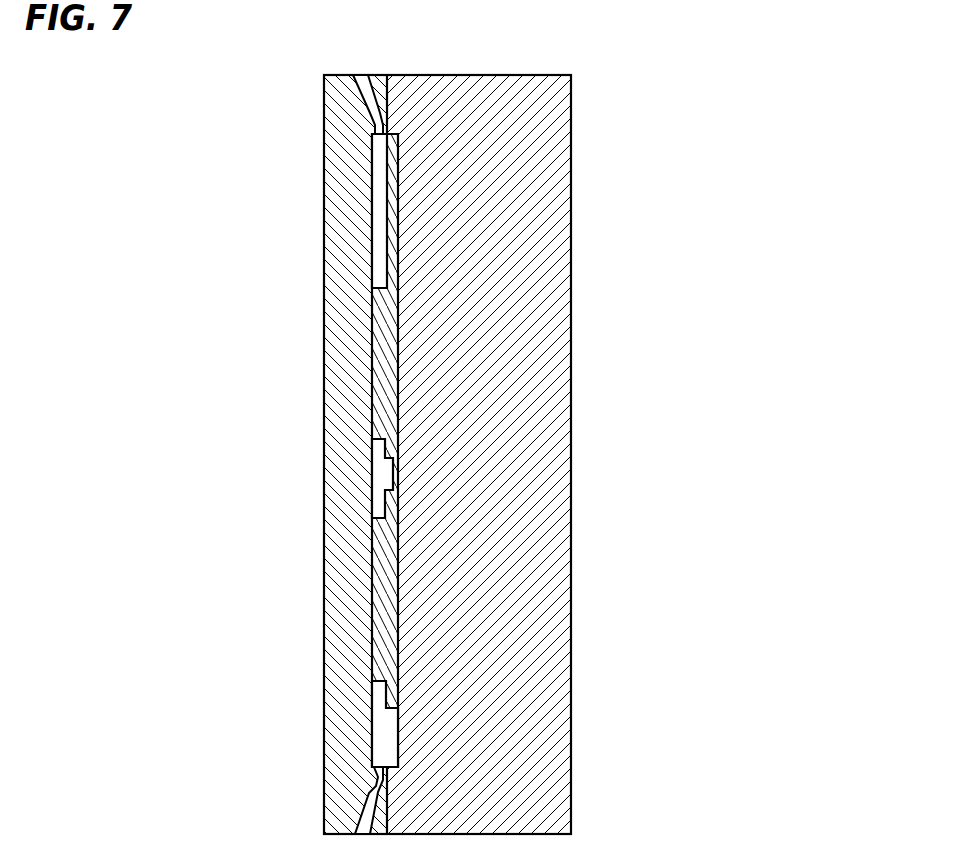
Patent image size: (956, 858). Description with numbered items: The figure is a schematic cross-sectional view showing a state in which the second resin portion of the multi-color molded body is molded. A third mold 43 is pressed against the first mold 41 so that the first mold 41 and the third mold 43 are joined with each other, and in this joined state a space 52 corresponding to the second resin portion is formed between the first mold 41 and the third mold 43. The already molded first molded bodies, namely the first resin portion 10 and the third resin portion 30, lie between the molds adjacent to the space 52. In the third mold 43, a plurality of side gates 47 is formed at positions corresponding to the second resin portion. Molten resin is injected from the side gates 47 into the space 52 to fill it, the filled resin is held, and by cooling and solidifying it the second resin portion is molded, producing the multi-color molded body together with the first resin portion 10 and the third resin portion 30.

The first resin portion 10 is at (387, 360).
The third resin portion 30 is at (388, 587).
The first mold 41 is at (555, 386).
The third mold 43 is at (340, 348).
The side gates 47 is at (379, 132).
The space 52 is at (380, 225).